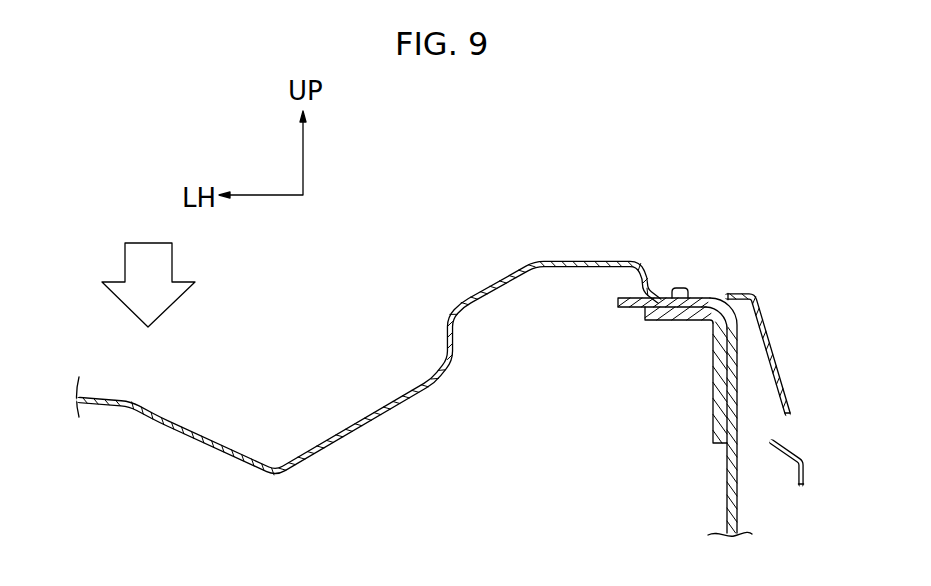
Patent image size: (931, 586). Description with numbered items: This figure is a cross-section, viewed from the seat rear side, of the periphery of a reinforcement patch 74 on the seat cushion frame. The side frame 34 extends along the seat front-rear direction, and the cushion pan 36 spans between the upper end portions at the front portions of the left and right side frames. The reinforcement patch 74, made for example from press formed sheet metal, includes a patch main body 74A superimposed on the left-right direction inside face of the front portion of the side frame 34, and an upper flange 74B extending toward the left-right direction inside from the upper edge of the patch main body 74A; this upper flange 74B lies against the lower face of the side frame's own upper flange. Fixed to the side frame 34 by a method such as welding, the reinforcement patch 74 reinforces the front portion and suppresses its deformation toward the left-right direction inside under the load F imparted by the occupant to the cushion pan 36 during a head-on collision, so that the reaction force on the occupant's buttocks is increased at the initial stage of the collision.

The cushion pan 36 is at (353, 427).
The reinforcement patch 74 is at (656, 395).
The patch main body 74A is at (712, 413).
The upper flange 74B is at (672, 322).
The side frame 34 is at (720, 495).
The load F is at (173, 258).